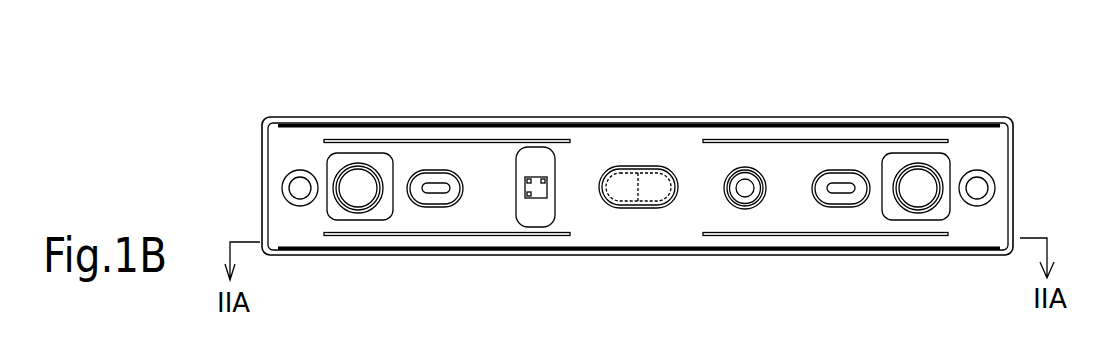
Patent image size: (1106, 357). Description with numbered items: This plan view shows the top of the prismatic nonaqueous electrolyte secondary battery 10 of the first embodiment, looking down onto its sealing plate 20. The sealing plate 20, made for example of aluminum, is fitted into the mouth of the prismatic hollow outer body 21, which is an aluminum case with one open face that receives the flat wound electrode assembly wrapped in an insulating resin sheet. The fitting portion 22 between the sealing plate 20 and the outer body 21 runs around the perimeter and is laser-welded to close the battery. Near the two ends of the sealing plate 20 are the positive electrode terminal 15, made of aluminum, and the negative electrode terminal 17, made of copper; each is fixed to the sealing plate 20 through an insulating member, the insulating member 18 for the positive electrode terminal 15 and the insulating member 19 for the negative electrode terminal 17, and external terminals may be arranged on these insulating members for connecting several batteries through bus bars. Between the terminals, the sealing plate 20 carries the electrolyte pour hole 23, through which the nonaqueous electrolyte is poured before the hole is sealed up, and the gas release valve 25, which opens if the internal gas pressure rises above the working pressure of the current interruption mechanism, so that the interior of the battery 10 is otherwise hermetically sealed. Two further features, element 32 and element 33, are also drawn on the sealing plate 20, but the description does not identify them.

The prismatic nonaqueous electrolyte secondary battery 10 is at (213, 100).
The positive electrode terminal 15 is at (918, 193).
The negative electrode terminal 17 is at (358, 192).
The insulating member 18 is at (937, 162).
The insulating member 19 is at (337, 160).
The sealing plate 20 is at (688, 142).
The prismatic hollow outer body 21 is at (1012, 118).
The fitting portion 22 is at (1013, 160).
The electrolyte pour hole 23 is at (745, 192).
The gas release valve 25 is at (610, 175).
The indicator window 32 is at (538, 218).
The indicator lamp 33 is at (533, 180).